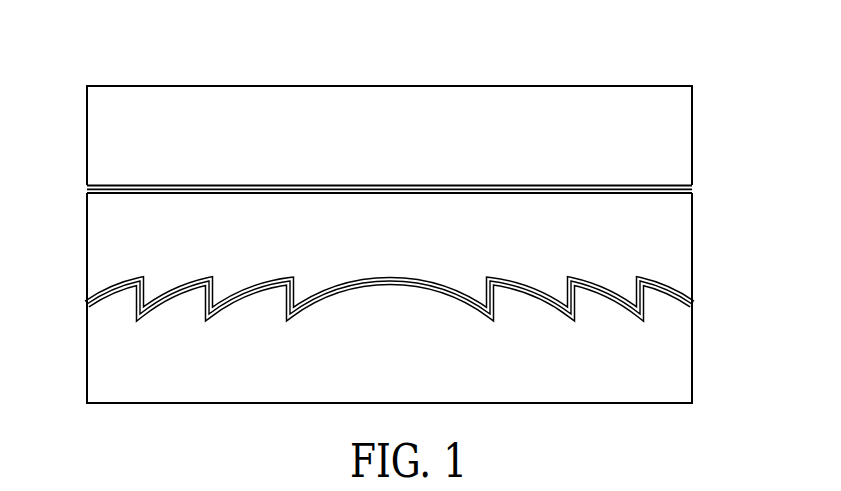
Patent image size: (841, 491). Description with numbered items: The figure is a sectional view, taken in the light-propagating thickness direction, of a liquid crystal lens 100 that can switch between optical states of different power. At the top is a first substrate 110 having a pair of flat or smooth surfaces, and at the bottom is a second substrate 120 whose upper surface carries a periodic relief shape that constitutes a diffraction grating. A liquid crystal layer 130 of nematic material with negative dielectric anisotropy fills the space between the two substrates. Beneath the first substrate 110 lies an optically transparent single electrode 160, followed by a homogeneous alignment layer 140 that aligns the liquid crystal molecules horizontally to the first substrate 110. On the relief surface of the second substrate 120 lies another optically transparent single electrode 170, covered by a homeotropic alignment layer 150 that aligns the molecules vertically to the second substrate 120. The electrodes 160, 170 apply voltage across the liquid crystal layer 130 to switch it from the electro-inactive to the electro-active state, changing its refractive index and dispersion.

The liquid crystal lens 100 is at (387, 205).
The first substrate 110 is at (669, 142).
The second substrate 120 is at (669, 363).
The liquid crystal layer 130 is at (669, 246).
The homogeneous alignment layer 140 is at (389, 188).
The homeotropic alignment layer 150 is at (389, 290).
The optically transparent single electrode 160 is at (496, 182).
The optically transparent single electrode 170 is at (496, 304).